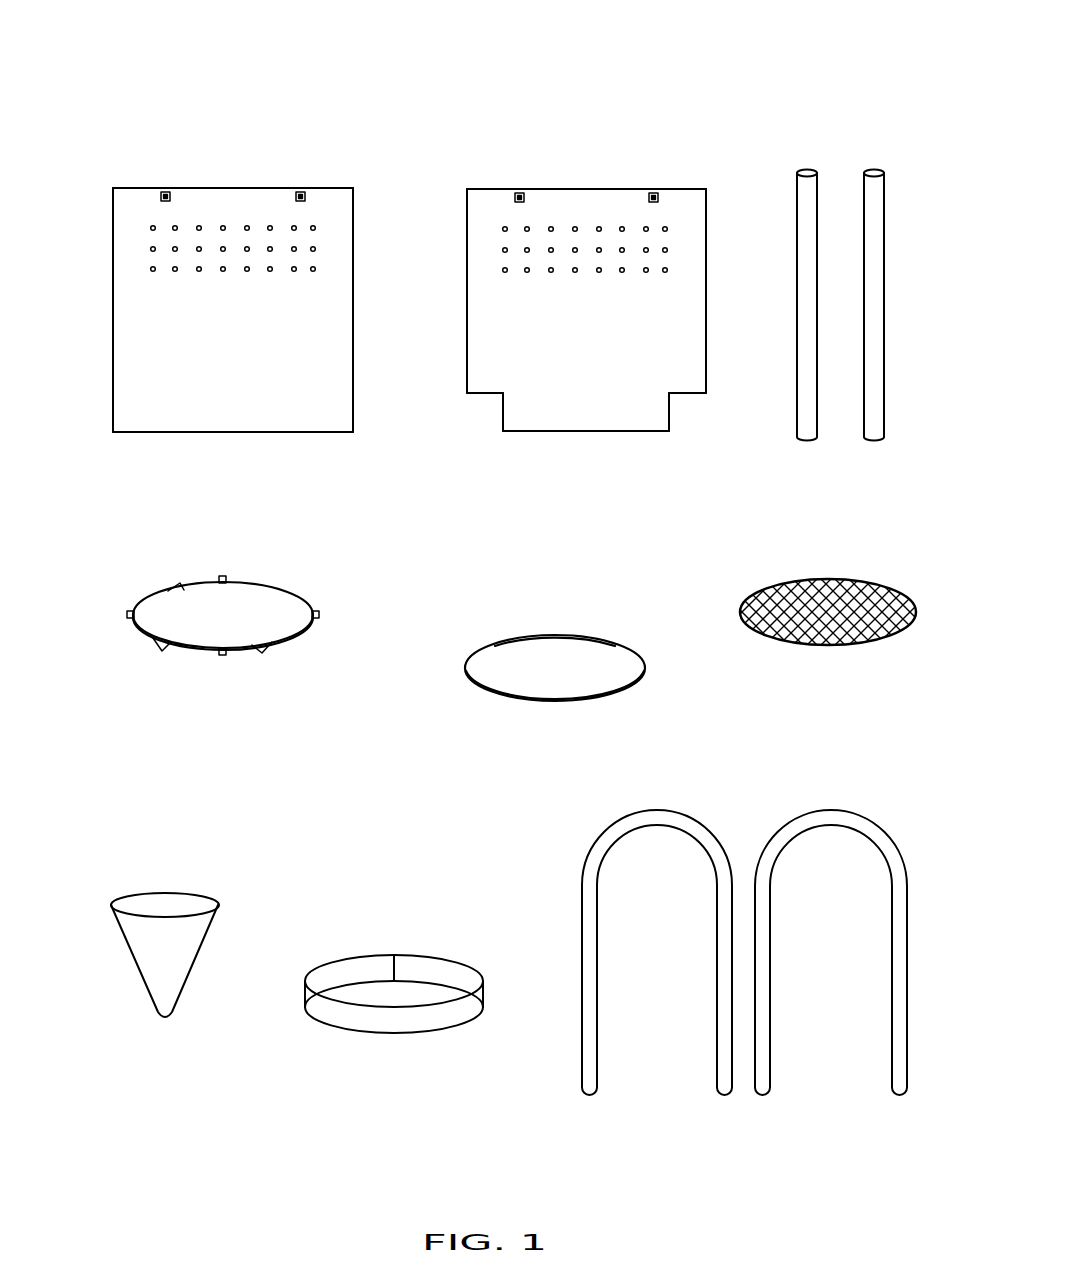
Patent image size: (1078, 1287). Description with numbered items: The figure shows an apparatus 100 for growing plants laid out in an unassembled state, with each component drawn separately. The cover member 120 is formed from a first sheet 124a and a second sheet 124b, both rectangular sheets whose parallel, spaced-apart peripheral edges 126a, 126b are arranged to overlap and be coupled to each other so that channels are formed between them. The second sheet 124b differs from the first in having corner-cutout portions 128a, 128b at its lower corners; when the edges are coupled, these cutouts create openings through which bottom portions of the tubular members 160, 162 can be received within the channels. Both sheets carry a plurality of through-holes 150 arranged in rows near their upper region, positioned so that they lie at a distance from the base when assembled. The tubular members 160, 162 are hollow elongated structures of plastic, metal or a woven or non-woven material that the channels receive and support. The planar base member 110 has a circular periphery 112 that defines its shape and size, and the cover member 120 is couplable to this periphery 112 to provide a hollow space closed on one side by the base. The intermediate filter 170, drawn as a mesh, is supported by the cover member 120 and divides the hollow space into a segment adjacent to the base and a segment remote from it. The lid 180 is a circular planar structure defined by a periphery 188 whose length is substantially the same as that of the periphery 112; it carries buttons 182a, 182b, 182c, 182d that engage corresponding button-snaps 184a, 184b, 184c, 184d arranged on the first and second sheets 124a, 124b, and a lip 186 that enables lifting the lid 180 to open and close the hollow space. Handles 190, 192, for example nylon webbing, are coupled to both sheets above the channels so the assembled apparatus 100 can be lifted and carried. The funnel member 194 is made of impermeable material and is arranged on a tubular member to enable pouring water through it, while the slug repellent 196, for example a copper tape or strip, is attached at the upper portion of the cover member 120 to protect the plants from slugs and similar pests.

The apparatus for growing plants 100 is at (760, 62).
The cover member 120 is at (322, 116).
The first sheet 124a is at (192, 188).
The second sheet 124b is at (567, 196).
The peripheral edge 126a is at (122, 322).
The peripheral edge 126b is at (467, 223).
The corner-cutout portion 128a is at (503, 413).
The corner-cutout portion 128b is at (669, 410).
The through-holes 150 is at (153, 228).
The tubular member 160 is at (807, 173).
The tubular member 162 is at (876, 173).
The intermediate filter 170 is at (828, 582).
The lid 180 is at (182, 630).
The button 182a is at (222, 655).
The button 182b is at (318, 615).
The button 182c is at (225, 578).
The button 182d is at (128, 612).
The button-snap 184a is at (162, 192).
The button-snap 184b is at (300, 192).
The button-snap 184c is at (518, 193).
The button-snap 184d is at (656, 195).
The lip 186 is at (265, 645).
The periphery 188 is at (180, 583).
The base member 110 is at (632, 655).
The periphery 112 is at (535, 638).
The handle 190 is at (597, 840).
The handle 192 is at (800, 818).
The funnel member 194 is at (147, 965).
The slug repellent 196 is at (318, 1010).